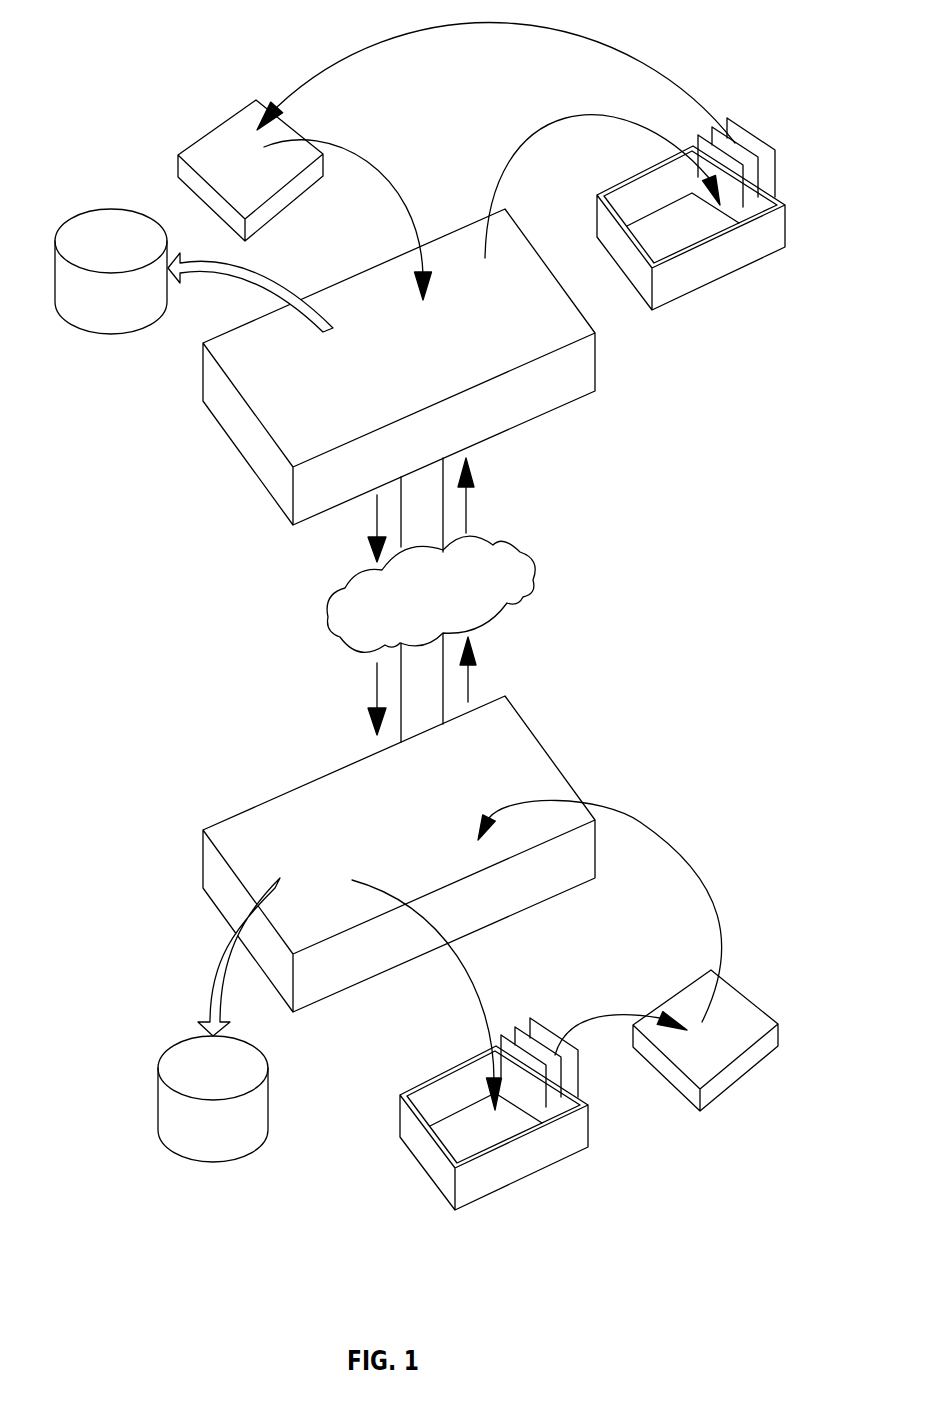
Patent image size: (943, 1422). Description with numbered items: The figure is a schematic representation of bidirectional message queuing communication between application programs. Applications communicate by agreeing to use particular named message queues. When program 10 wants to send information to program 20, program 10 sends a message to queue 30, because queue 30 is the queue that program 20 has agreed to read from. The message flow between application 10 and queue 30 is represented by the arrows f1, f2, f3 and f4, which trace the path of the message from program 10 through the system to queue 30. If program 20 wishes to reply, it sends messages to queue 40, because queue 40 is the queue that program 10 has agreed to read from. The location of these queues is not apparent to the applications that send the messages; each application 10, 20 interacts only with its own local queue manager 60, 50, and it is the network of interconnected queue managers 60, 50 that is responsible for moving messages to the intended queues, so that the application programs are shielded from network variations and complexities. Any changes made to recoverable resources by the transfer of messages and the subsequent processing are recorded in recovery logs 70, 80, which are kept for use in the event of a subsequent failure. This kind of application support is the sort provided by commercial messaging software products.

The program 10 is at (212, 148).
The program 20 is at (732, 1075).
The queue 30 is at (525, 1168).
The queue 40 is at (725, 260).
The local queue manager 50 is at (248, 823).
The local queue manager 60 is at (210, 382).
The recovery log 70 is at (93, 227).
The recovery log 80 is at (170, 1106).
The arrow f1 is at (385, 167).
The arrow f2 is at (374, 519).
The arrow f3 is at (374, 688).
The arrow f4 is at (483, 1002).